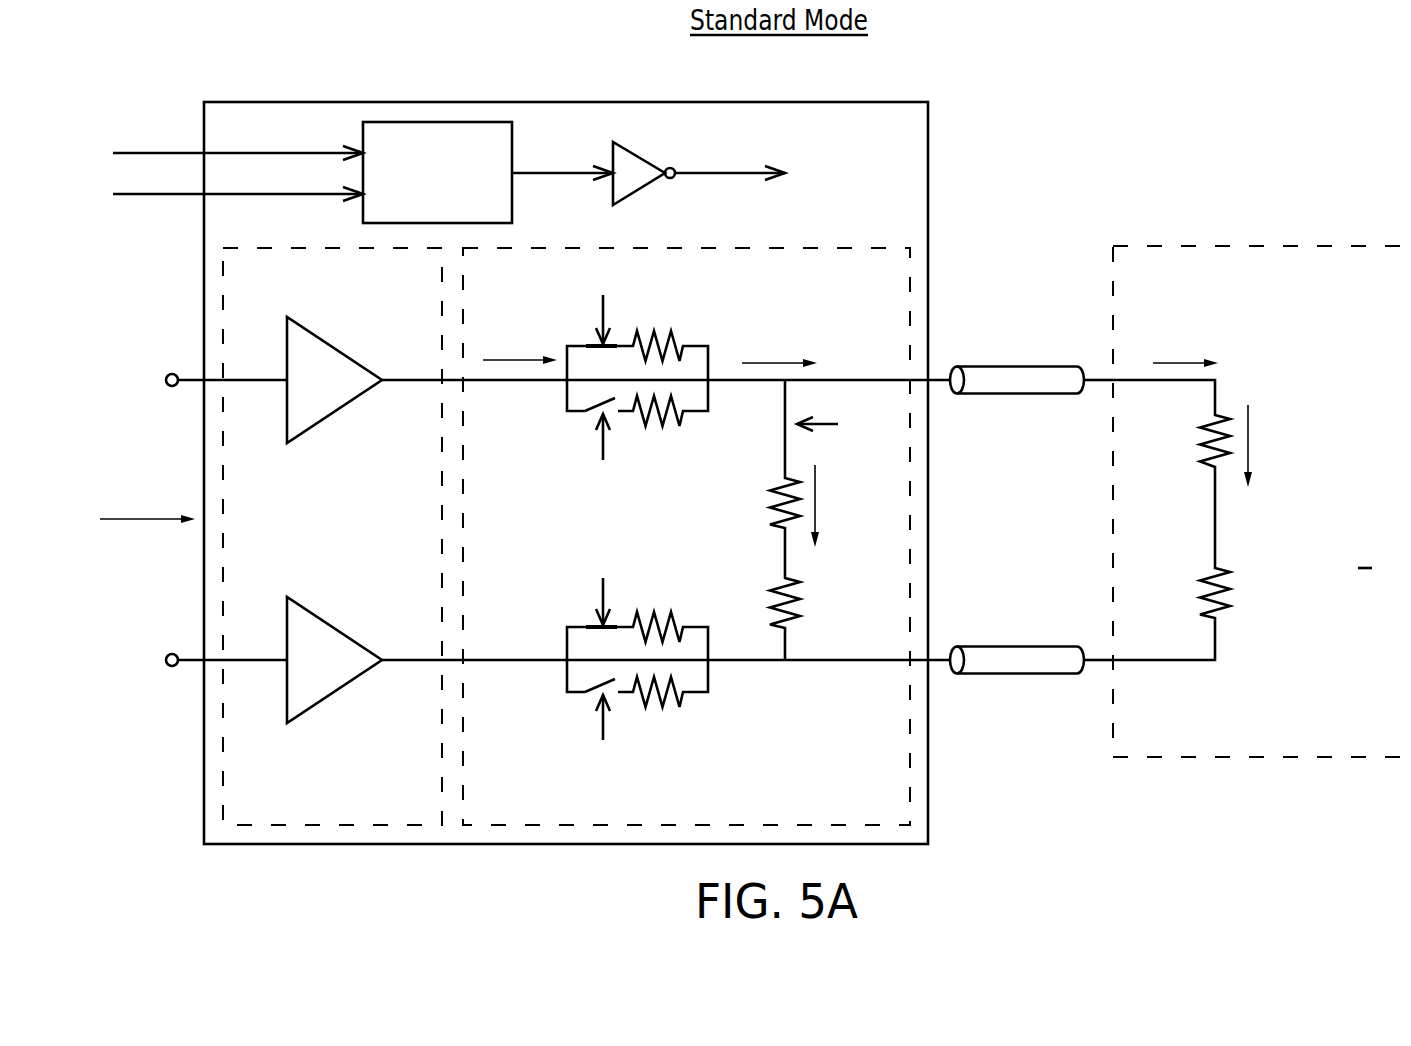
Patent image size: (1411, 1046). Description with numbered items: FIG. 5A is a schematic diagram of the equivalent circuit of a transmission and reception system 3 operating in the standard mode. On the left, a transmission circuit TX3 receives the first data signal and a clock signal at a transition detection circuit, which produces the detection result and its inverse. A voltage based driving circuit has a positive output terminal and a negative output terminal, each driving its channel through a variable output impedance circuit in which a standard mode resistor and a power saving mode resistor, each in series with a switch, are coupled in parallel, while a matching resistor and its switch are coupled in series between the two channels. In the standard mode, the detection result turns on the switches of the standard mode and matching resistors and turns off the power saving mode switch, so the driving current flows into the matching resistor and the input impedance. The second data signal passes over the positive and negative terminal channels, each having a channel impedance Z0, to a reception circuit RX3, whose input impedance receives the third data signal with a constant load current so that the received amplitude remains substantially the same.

The transmission and reception system 3 is at (1292, 85).
The transmission circuit TX3 is at (507, 101).
The reception circuit RX3 is at (1265, 246).
The channel impedance Z0 is at (1021, 646).